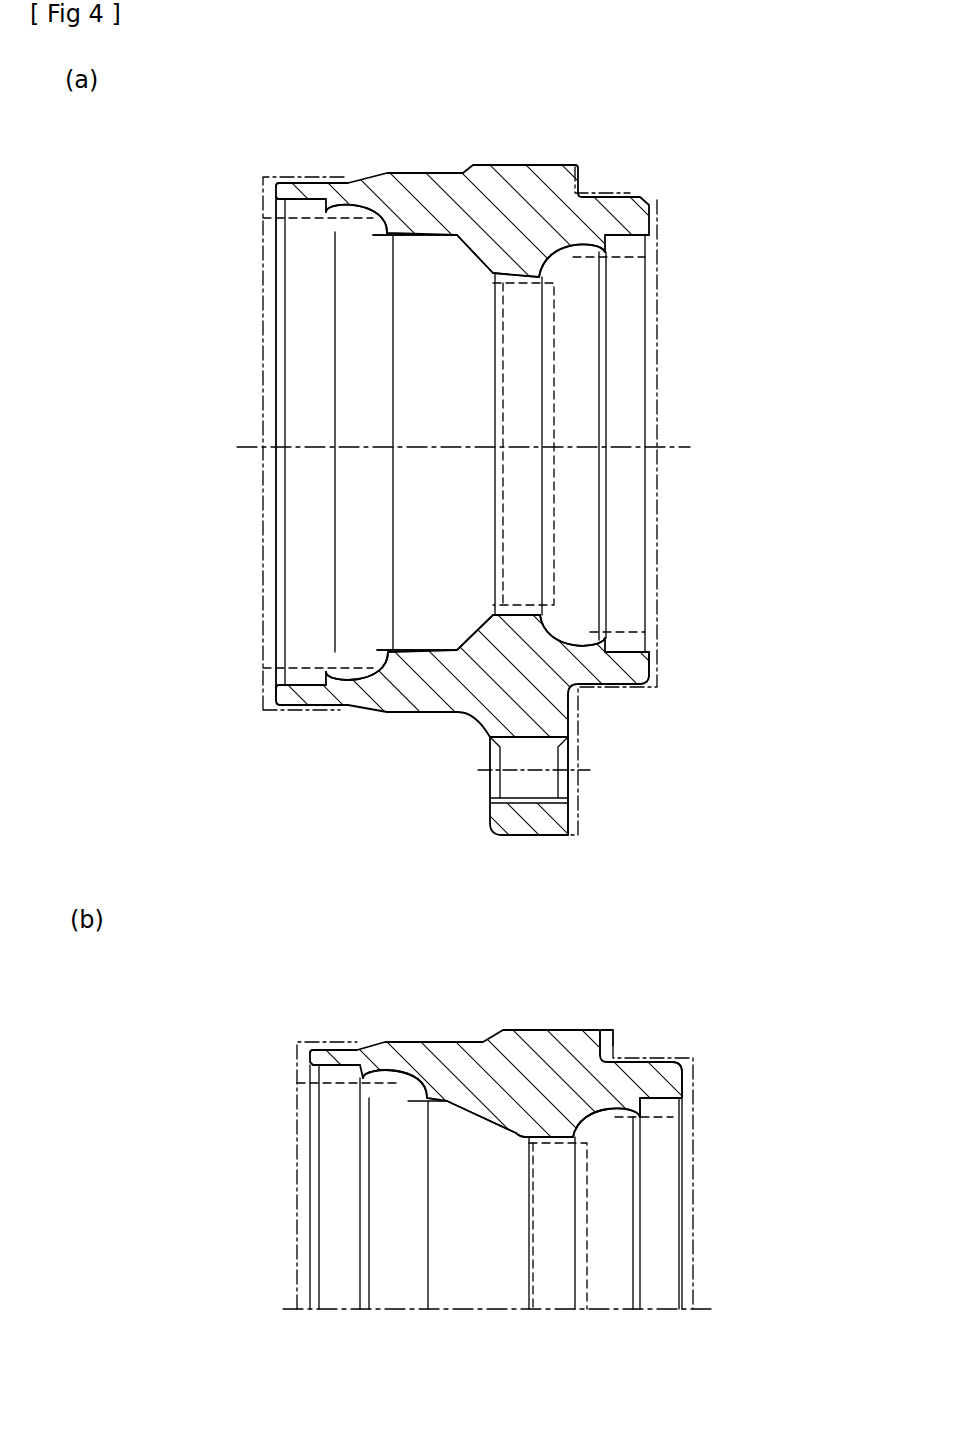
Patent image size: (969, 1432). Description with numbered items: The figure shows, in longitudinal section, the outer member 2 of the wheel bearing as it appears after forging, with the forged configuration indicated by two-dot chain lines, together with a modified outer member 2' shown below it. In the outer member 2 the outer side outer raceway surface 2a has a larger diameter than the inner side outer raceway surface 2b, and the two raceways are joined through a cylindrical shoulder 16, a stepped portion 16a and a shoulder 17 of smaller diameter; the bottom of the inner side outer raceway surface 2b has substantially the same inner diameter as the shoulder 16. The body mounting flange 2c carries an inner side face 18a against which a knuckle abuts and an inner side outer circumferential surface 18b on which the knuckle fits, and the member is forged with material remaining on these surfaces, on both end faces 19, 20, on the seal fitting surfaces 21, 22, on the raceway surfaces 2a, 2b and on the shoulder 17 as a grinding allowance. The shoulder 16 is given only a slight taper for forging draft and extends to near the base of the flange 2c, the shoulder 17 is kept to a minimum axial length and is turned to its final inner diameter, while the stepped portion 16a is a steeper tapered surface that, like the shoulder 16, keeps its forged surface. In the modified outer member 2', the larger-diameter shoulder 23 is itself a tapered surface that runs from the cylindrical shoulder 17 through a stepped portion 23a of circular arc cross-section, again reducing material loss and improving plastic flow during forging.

The outer member 2 is at (462, 423).
The outer member 2' is at (496, 1056).
The outer side outer raceway surface 2a is at (375, 228).
The inner side outer raceway surface 2b is at (556, 276).
The body mounting flange 2c is at (522, 836).
The cylindrical shoulder 16 is at (427, 257).
The stepped portion 16a is at (462, 256).
The shoulder 17 is at (497, 285).
The inner side face 18a is at (568, 817).
The inner side outer circumferential surface 18b is at (613, 685).
The end face 19 is at (277, 700).
The end face 20 is at (658, 667).
The seal fitting surface 21 is at (277, 218).
The seal fitting surface 22 is at (648, 245).
The shoulder 23 is at (463, 1122).
The stepped portion 23a is at (500, 1142).